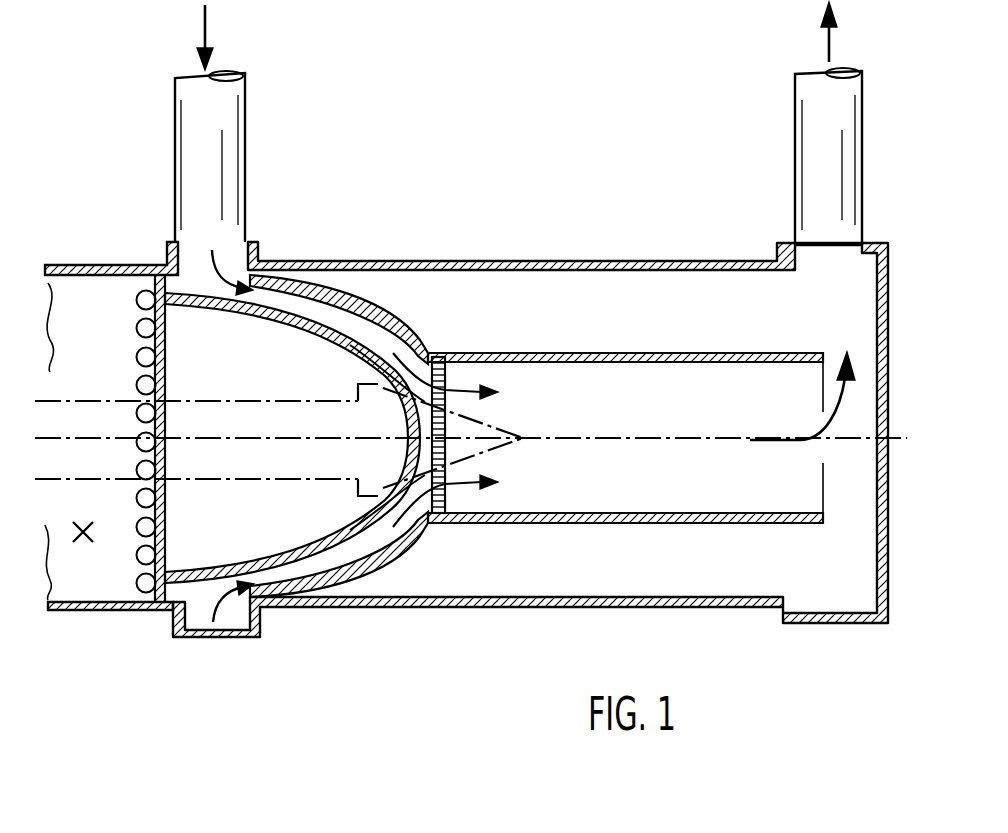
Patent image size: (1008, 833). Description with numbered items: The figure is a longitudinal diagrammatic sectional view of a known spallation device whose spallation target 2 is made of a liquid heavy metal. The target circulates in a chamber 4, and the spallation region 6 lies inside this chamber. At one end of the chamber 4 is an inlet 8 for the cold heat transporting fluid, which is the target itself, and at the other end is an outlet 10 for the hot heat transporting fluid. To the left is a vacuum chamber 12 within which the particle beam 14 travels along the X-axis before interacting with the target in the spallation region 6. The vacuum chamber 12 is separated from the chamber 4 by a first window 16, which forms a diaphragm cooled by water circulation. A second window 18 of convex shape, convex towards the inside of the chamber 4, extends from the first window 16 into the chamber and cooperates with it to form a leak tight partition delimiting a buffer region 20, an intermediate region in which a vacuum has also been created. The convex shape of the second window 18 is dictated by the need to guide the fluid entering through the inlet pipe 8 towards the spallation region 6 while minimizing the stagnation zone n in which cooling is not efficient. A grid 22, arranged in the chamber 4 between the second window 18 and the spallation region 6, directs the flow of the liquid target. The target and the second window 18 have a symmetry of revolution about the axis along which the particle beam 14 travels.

The spallation target 2 is at (368, 322).
The chamber 4 is at (605, 352).
The spallation region 6 is at (718, 395).
The inlet 8 is at (200, 115).
The outlet 10 is at (825, 117).
The vacuum chamber 12 is at (97, 580).
The particle beam 14 is at (277, 480).
The first window 16 is at (155, 318).
The second window 18 is at (340, 547).
The buffer region 20 is at (288, 352).
The grid 22 is at (458, 365).
The stagnation zone n is at (410, 470).